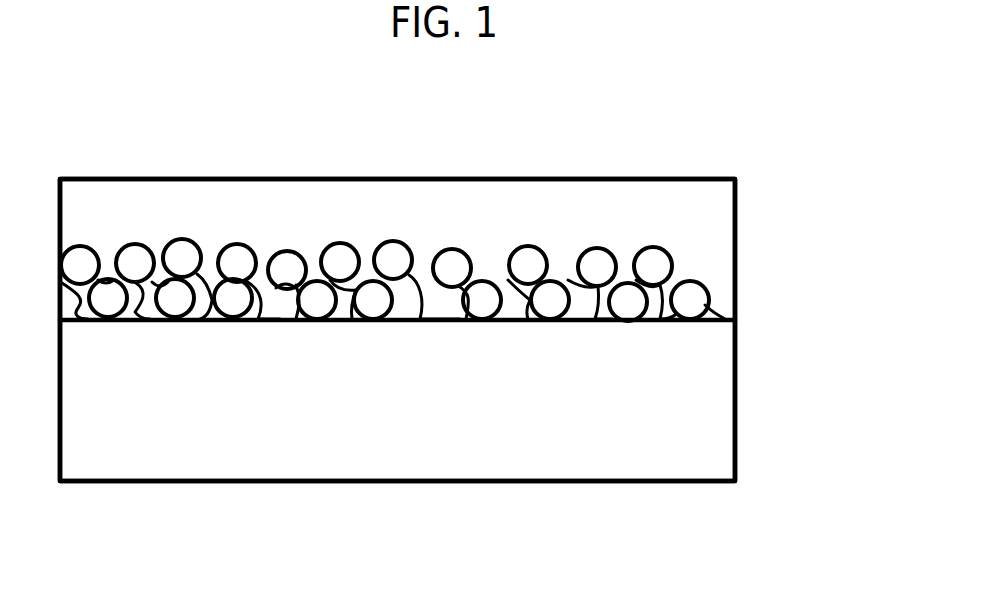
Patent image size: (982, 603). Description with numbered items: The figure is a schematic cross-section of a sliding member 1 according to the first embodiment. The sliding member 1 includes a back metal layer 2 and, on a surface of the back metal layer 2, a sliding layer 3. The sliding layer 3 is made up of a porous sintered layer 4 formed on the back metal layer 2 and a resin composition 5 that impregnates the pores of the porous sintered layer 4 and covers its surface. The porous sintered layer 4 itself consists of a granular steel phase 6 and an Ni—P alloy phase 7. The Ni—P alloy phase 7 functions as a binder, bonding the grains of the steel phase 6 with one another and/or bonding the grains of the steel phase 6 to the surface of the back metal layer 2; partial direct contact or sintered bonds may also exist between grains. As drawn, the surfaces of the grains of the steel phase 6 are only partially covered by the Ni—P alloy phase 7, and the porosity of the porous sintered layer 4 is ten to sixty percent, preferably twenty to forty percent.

The sliding member 1 is at (697, 149).
The back metal layer 2 is at (378, 483).
The sliding layer 3 is at (373, 178).
The porous sintered layer 4 is at (465, 283).
The resin composition 5 is at (548, 225).
The granular steel phase 6 is at (658, 265).
The Ni—P alloy phase 7 is at (717, 313).